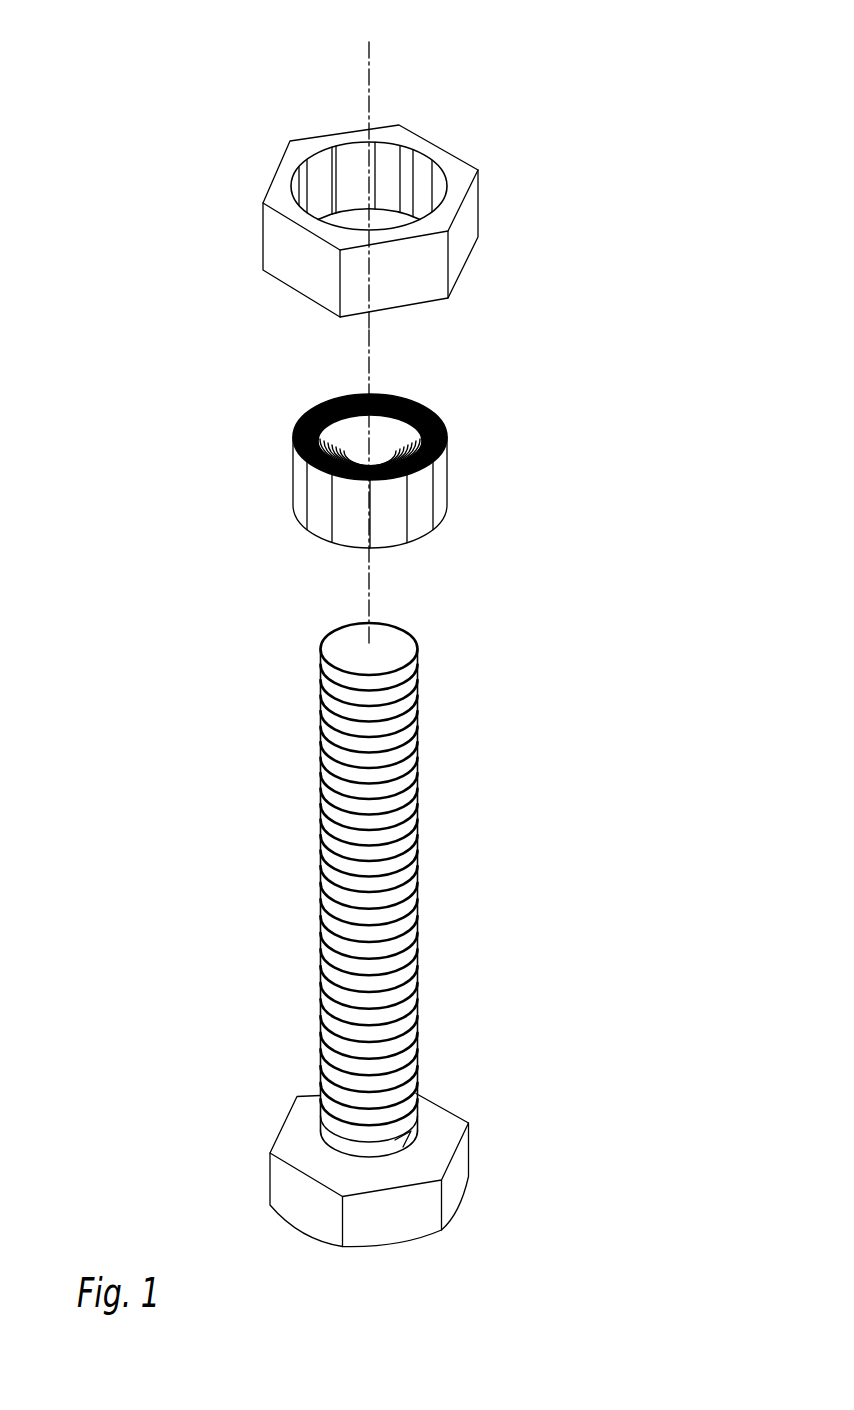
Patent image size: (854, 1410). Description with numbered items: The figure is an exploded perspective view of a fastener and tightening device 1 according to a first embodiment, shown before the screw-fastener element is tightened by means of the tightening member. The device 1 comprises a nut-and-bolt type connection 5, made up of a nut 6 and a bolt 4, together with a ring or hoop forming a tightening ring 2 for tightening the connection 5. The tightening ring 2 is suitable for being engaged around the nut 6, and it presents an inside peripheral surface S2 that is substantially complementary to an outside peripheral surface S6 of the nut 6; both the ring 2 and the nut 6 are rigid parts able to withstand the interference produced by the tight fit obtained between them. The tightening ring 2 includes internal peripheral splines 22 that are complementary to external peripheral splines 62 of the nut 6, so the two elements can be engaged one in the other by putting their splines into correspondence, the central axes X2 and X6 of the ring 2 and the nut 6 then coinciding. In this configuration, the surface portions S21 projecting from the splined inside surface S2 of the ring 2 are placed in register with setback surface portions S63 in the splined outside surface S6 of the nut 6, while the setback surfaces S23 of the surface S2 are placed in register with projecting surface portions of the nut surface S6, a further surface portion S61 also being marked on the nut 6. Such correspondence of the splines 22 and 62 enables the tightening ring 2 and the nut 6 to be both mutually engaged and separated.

The fastener and tightening device 1 is at (625, 125).
The tightening ring 2 is at (248, 250).
The internal peripheral splines 22 is at (343, 157).
The projecting surface portions S21 is at (318, 178).
The setback surfaces S23 is at (355, 152).
The inside peripheral surface S2 is at (422, 183).
The central axis of the tightening ring X2 is at (383, 175).
The central axis of the nut X6 is at (383, 488).
The nut-and-bolt type connection 5 is at (169, 572).
The nut 6 is at (290, 522).
The outside peripheral surface S6 is at (292, 467).
The external peripheral splines 62 is at (388, 522).
The facet surface of ring nut S61 is at (318, 518).
The setback surface portions S63 is at (417, 503).
The bolt 4 is at (297, 652).